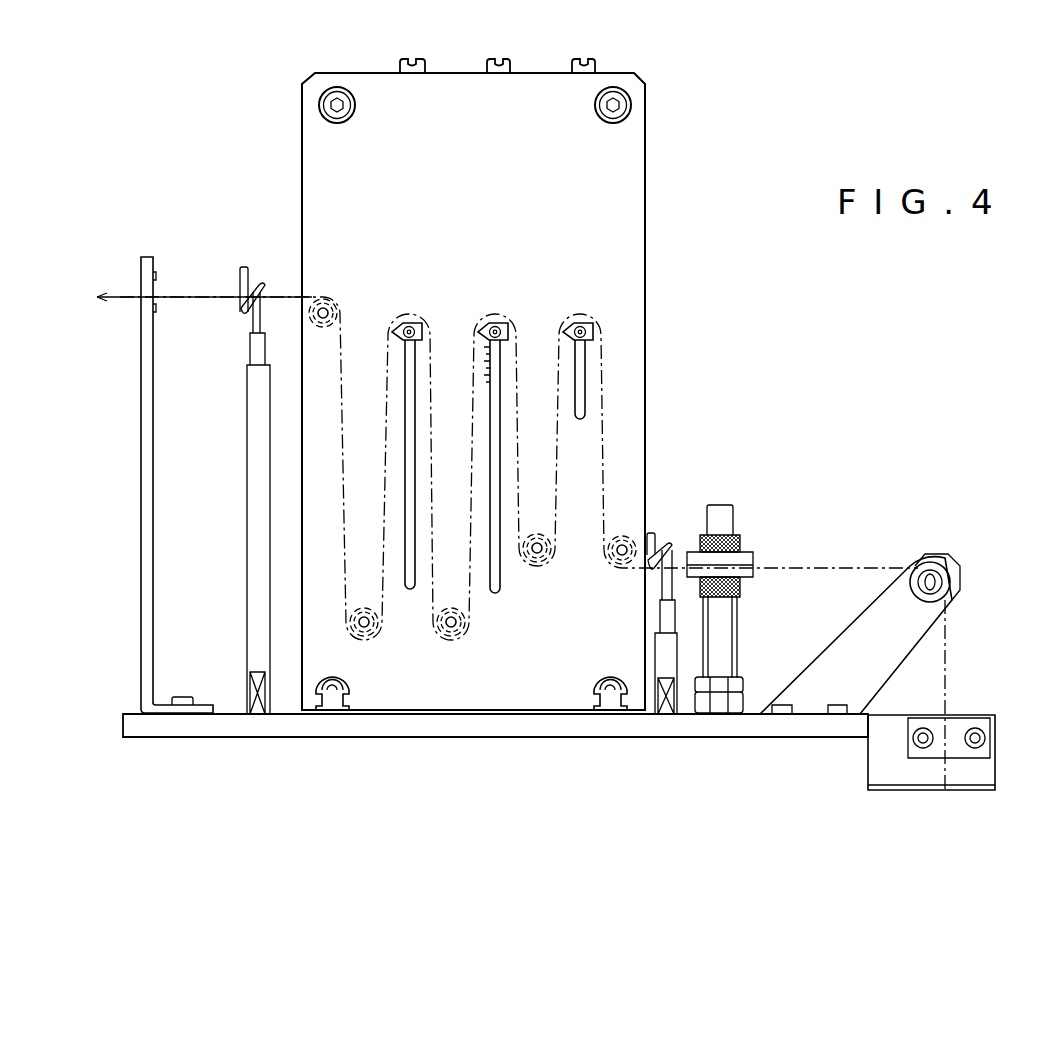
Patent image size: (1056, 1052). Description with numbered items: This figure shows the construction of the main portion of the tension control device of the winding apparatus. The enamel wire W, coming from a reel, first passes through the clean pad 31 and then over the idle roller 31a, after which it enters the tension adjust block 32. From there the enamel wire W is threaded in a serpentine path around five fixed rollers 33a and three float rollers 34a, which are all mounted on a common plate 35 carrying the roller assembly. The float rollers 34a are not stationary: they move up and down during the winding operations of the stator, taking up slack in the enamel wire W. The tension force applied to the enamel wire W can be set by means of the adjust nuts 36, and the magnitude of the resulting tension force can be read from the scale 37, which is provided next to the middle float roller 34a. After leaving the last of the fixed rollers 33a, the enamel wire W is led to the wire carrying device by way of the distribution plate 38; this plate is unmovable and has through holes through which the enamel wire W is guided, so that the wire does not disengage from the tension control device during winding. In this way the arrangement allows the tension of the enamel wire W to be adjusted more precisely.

The clean pad 31 is at (960, 720).
The idle roller 31a is at (948, 560).
The tension adjust block 32 is at (737, 535).
The fixed rollers 33a is at (318, 300).
The float rollers 34a is at (407, 325).
The mounting plate 35 is at (637, 222).
The adjust nuts 36 is at (420, 57).
The scale 37 is at (486, 328).
The distribution plate 38 is at (148, 262).
The enamel wire W is at (829, 567).